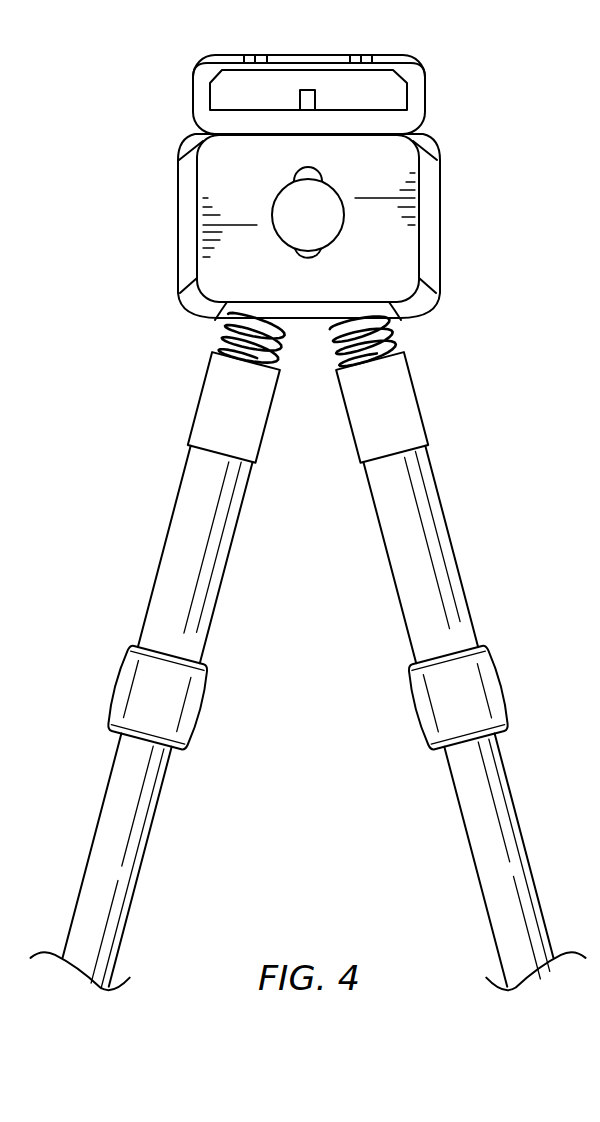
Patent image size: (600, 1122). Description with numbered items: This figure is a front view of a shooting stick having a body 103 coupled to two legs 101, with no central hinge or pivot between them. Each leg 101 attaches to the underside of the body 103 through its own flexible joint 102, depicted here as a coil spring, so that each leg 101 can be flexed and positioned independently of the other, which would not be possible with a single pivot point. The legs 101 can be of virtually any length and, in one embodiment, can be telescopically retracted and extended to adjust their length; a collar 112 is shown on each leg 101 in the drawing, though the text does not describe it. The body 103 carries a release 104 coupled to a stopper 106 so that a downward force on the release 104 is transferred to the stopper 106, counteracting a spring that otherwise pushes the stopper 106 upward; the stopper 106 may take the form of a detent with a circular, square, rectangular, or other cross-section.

The leg 101 is at (163, 549).
The flexible joint 102 is at (392, 333).
The body 103 is at (178, 180).
The release 104 is at (323, 222).
The stopper 106 is at (306, 90).
The leg collar / joint 112 is at (205, 713).